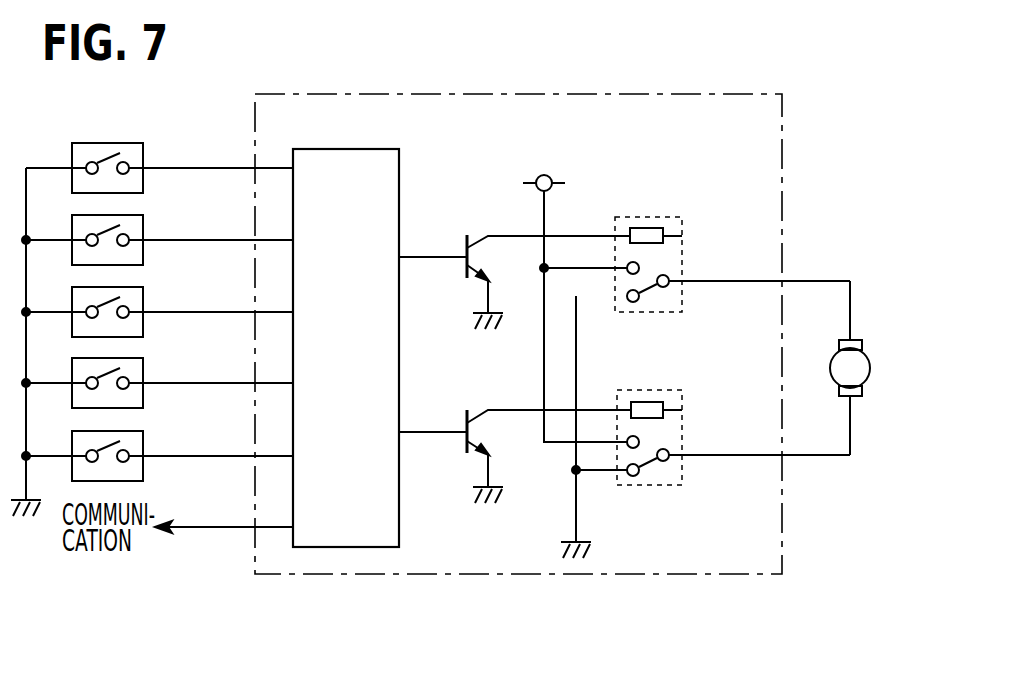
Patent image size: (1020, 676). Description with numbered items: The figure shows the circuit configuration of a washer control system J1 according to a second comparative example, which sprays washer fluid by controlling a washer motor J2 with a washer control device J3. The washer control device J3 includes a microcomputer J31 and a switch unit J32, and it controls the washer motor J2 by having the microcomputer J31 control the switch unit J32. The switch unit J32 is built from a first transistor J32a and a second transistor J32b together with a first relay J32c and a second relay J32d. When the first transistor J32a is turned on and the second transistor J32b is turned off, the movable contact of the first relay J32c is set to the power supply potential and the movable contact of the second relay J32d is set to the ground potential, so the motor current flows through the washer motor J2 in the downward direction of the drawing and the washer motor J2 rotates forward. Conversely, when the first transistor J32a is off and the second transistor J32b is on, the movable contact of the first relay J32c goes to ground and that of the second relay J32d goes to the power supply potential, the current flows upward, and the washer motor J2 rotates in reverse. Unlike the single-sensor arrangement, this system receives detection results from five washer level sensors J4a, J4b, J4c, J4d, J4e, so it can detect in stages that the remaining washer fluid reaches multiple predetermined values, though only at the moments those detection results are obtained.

The washer control system J1 is at (845, 122).
The washer motor J2 is at (870, 365).
The washer control device J3 is at (720, 94).
The microcomputer J31 is at (380, 147).
The switch unit J32 is at (624, 346).
The first transistor J32a is at (467, 243).
The second transistor J32b is at (467, 425).
The first relay J32c is at (673, 210).
The second relay J32d is at (688, 380).
The washer level sensor J4a is at (125, 143).
The washer level sensor J4b is at (125, 215).
The washer level sensor J4c is at (125, 287).
The washer level sensor J4d is at (125, 358).
The washer level sensor J4e is at (125, 431).